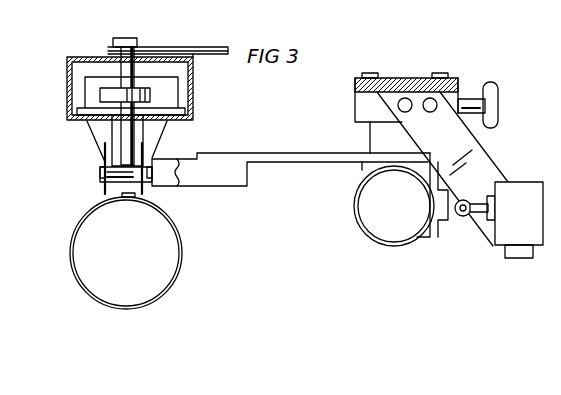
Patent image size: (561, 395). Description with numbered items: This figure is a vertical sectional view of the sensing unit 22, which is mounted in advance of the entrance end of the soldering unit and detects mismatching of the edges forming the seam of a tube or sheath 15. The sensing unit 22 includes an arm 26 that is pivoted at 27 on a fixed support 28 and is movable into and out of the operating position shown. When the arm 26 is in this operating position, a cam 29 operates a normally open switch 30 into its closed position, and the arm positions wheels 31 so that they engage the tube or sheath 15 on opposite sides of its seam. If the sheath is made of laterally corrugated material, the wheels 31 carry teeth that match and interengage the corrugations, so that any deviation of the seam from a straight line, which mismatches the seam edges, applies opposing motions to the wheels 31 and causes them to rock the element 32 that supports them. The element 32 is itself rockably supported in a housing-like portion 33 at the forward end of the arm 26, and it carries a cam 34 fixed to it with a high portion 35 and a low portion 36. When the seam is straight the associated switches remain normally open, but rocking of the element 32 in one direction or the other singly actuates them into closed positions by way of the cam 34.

The tube or sheath 15 is at (181, 234).
The sensing unit 22 is at (270, 130).
The arm 26 is at (281, 162).
The pivot 27 is at (377, 195).
The fixed support 28 is at (368, 93).
The cam 29 is at (449, 207).
The normally open switch 30 is at (518, 196).
The wheels 31 is at (103, 190).
The element 32 is at (120, 127).
The housing-like portion 33 is at (70, 95).
The cam 34 is at (108, 87).
The high portion 35 is at (100, 91).
The low portion 36 is at (150, 94).